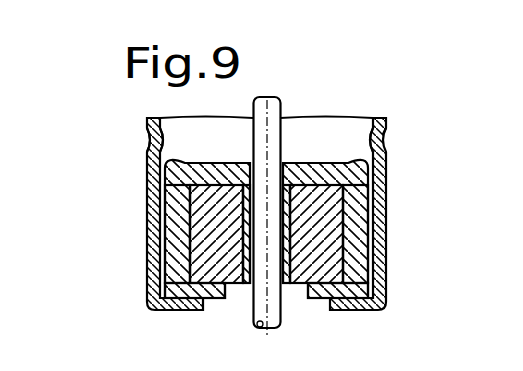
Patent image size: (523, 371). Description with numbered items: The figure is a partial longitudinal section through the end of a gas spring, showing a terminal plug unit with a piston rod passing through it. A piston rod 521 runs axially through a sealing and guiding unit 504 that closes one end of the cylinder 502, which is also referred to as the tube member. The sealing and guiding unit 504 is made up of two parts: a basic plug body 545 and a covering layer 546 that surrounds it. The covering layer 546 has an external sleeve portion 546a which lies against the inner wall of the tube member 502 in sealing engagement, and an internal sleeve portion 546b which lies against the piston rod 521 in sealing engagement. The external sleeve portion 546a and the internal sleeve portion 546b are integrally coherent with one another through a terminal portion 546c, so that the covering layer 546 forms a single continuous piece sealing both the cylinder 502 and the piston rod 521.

The cylinder 502 is at (383, 252).
The sealing and guiding unit 504 is at (357, 224).
The piston rod 521 is at (270, 147).
The basic plug body 545 is at (197, 267).
The covering layer 546 is at (172, 187).
The external sleeve portion 546a is at (175, 225).
The internal sleeve portion 546b is at (293, 204).
The terminal portion 546c is at (157, 143).